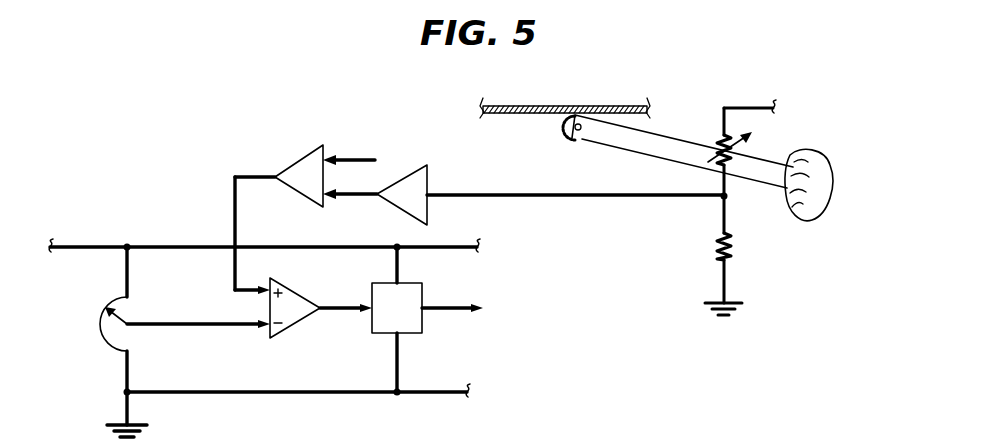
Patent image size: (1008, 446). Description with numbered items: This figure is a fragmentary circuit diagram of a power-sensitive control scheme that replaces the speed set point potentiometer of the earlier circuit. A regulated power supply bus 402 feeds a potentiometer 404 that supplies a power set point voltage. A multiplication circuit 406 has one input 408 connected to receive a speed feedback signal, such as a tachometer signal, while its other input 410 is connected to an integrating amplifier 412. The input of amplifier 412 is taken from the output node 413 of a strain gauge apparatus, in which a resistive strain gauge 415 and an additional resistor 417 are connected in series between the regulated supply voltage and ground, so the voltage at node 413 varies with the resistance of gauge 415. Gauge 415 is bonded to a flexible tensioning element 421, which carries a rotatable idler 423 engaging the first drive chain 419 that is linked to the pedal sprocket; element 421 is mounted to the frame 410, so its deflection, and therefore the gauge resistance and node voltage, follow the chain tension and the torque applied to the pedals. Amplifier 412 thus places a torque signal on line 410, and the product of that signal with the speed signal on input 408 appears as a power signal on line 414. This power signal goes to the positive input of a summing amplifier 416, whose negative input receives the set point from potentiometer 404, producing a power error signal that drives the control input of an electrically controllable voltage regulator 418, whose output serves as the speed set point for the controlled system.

The regulated power supply bus 402 is at (80, 246).
The potentiometer 404 is at (100, 327).
The multiplication circuit 406 is at (290, 167).
The input 408 is at (363, 159).
The input (line) / frame 410 is at (360, 192).
The integrating amplifier 412 is at (427, 177).
The output node 413 is at (724, 198).
The line 414 is at (233, 275).
The resistive strain gauge 415 is at (735, 168).
The summing amplifier 416 is at (305, 317).
The additional resistor 417 is at (730, 255).
The electrically controllable voltage regulator 418 is at (423, 318).
The first drive chain 419 is at (635, 106).
The flexible tensioning element 421 is at (607, 142).
The rotatable idler 423 is at (562, 127).